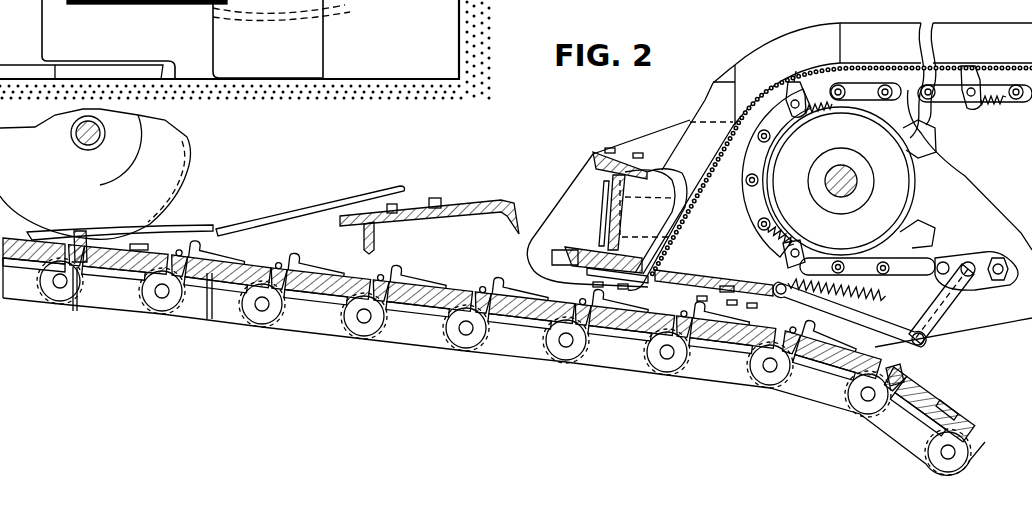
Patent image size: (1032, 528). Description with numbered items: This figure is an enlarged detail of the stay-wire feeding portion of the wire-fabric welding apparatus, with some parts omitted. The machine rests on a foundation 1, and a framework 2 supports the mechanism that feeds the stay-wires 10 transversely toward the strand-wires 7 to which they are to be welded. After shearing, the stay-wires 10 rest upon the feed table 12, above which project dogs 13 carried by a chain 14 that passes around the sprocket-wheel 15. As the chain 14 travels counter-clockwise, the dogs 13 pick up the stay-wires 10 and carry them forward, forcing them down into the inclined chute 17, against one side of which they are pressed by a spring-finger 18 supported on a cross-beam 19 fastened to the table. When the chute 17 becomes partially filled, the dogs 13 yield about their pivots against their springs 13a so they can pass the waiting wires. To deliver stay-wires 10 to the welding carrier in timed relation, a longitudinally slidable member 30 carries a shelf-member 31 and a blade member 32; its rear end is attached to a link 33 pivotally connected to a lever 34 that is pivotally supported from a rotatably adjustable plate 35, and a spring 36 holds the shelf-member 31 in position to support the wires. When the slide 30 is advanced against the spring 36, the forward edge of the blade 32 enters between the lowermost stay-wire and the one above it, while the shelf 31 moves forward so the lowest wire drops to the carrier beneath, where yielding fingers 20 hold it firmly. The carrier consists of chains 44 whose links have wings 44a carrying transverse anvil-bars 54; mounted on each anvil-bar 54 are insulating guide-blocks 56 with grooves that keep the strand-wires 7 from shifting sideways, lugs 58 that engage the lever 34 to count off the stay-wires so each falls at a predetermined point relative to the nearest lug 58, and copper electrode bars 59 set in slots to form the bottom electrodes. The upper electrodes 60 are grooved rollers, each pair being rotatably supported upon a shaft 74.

The foundation 1 is at (460, 11).
The framework 2 is at (1003, 336).
The strand-wires 7 is at (173, 232).
The stay-wires 10 is at (77, 233).
The feed table 12 is at (1014, 62).
The dogs 13 is at (815, 78).
The springs 13a is at (1010, 129).
The chain 14 is at (948, 93).
The sprocket-wheel 15 is at (915, 183).
The inclined chute 17 is at (712, 137).
The spring-finger 18 is at (677, 223).
The cross-beam 19 is at (604, 184).
The yielding fingers 20 is at (300, 222).
The slide member 30 is at (565, 252).
The shelf-member 31 is at (528, 273).
The blade member 32 is at (693, 258).
The link 33 is at (880, 326).
The lever 34 is at (941, 309).
The rotatably adjustable plate 35 is at (978, 253).
The spring 36 is at (836, 287).
The chains 44 is at (419, 336).
The wings 44a is at (389, 310).
The anvil-bars 54 is at (495, 349).
The guide-blocks 56 is at (140, 248).
The lugs 58 is at (92, 243).
The electrode bars 59 is at (76, 264).
The upper electrodes 60 is at (172, 165).
The shaft 74 is at (71, 134).